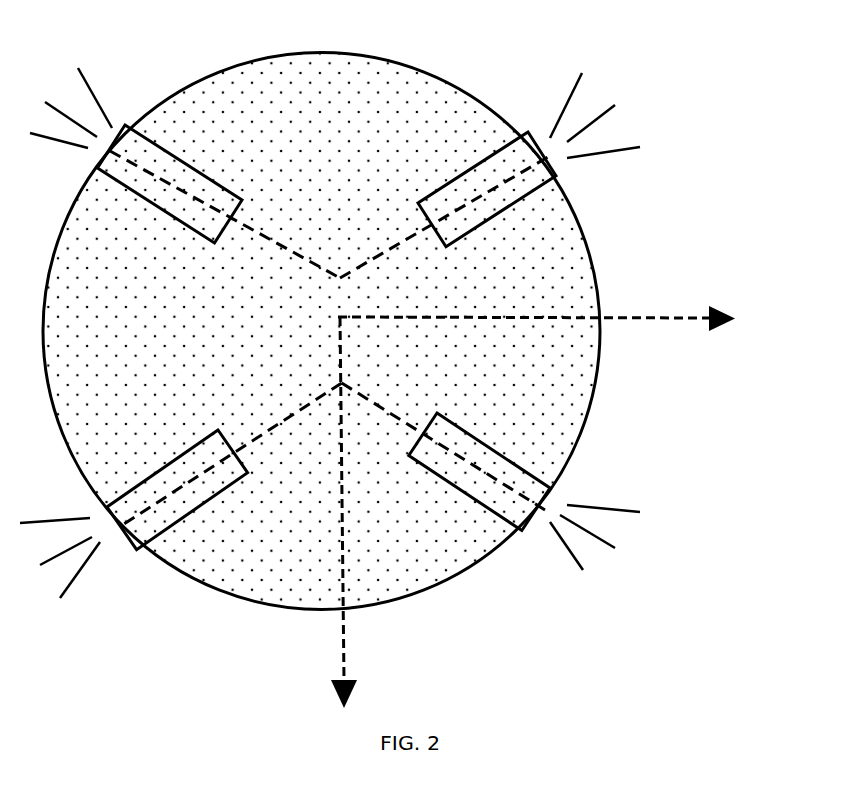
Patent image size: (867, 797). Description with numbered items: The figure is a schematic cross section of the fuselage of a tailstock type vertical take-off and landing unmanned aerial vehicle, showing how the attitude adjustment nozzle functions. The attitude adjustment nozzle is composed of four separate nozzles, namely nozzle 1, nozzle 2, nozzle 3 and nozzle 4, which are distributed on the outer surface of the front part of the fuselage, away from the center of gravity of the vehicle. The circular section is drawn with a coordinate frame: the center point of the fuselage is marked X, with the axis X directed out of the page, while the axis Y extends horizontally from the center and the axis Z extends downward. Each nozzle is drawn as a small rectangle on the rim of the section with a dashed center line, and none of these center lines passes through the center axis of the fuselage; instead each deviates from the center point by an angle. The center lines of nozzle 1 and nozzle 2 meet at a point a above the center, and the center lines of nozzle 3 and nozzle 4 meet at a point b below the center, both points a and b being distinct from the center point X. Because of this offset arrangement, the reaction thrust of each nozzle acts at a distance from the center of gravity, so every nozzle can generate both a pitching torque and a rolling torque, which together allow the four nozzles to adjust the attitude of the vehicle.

The nozzle 1 is at (185, 151).
The nozzle 2 is at (490, 152).
The nozzle 3 is at (491, 515).
The nozzle 4 is at (181, 517).
The center axis X is at (296, 316).
The Y axis Y is at (568, 327).
The Z axis Z is at (361, 517).
The intersection point a is at (360, 258).
The intersection point b is at (385, 464).